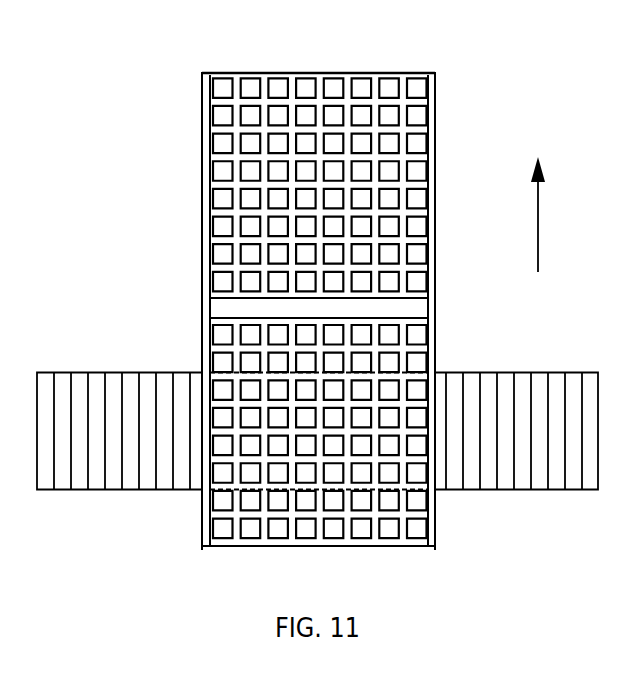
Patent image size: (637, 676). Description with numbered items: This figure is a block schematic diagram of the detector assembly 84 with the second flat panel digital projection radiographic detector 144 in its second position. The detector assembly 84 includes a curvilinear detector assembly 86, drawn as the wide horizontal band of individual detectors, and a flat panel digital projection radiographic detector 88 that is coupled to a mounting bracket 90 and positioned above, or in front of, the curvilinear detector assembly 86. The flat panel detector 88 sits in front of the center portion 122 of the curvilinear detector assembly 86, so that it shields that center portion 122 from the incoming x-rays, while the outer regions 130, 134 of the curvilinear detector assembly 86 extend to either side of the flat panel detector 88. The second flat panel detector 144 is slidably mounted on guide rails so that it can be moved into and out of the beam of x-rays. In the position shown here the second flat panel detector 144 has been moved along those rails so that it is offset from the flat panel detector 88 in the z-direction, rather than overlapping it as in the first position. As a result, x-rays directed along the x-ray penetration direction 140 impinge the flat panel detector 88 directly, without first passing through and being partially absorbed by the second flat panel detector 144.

The detector assembly 84 is at (133, 311).
The curvilinear detector assembly 86 is at (96, 372).
The flat panel digital projection radiographic detector 88 is at (380, 547).
The mounting bracket 90 is at (203, 128).
The center portion 122 is at (233, 493).
The first portion of second component layer 130 is at (116, 506).
The second portion of second component layer 134 is at (525, 496).
The x-ray penetration direction 140 is at (538, 188).
The second flat panel digital projection radiographic detector 144 is at (278, 70).